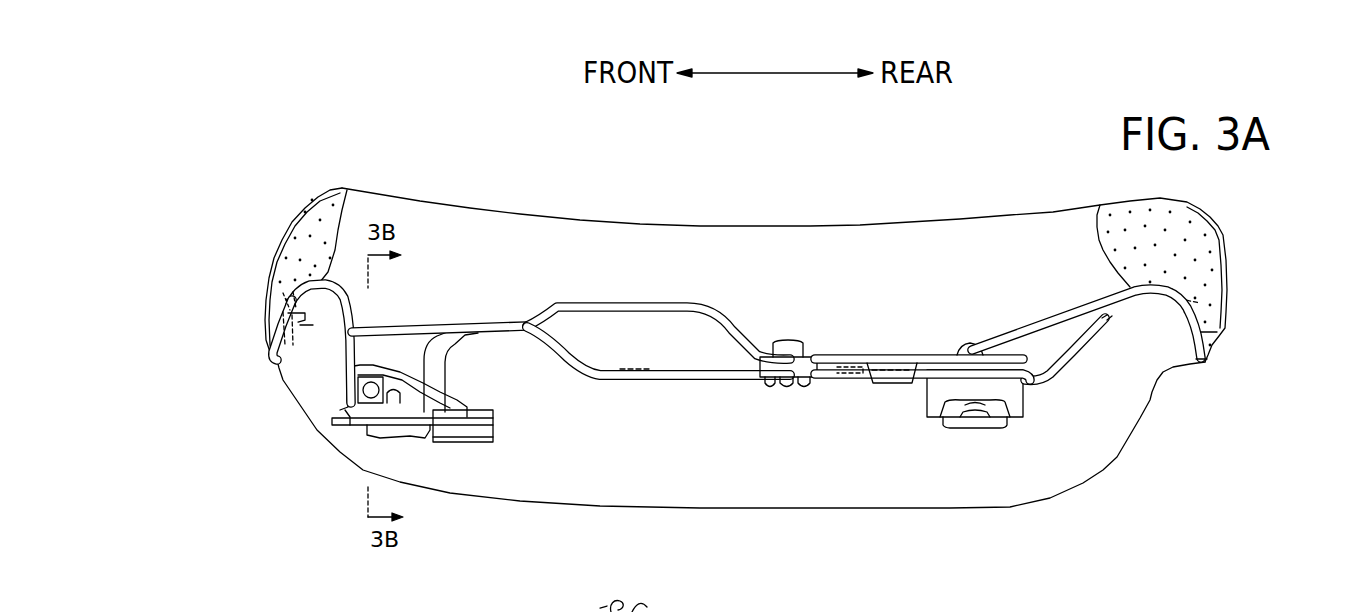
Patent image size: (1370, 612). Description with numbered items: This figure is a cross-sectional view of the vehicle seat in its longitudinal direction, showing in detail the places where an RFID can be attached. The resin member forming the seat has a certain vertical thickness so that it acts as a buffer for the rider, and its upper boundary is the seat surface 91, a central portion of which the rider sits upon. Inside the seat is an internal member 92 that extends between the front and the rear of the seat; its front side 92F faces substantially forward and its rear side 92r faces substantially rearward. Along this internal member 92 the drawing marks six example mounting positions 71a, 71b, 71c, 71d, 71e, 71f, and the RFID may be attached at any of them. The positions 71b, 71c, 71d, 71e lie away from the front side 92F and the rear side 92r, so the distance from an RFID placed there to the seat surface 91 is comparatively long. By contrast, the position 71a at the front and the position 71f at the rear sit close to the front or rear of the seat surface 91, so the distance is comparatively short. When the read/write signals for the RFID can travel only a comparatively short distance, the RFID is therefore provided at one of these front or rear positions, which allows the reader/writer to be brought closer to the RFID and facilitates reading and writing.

The RFID mounting position 71a is at (260, 340).
The RFID mounting position 71b is at (362, 302).
The RFID mounting position 71c is at (407, 309).
The RFID mounting position 71d is at (633, 352).
The RFID mounting position 71e is at (888, 340).
The RFID mounting position 71f is at (1223, 332).
The seat surface 91 is at (930, 215).
The internal member 92 is at (1037, 328).
The front side of internal member 92F is at (290, 302).
The rear side of internal member 92r is at (1230, 293).